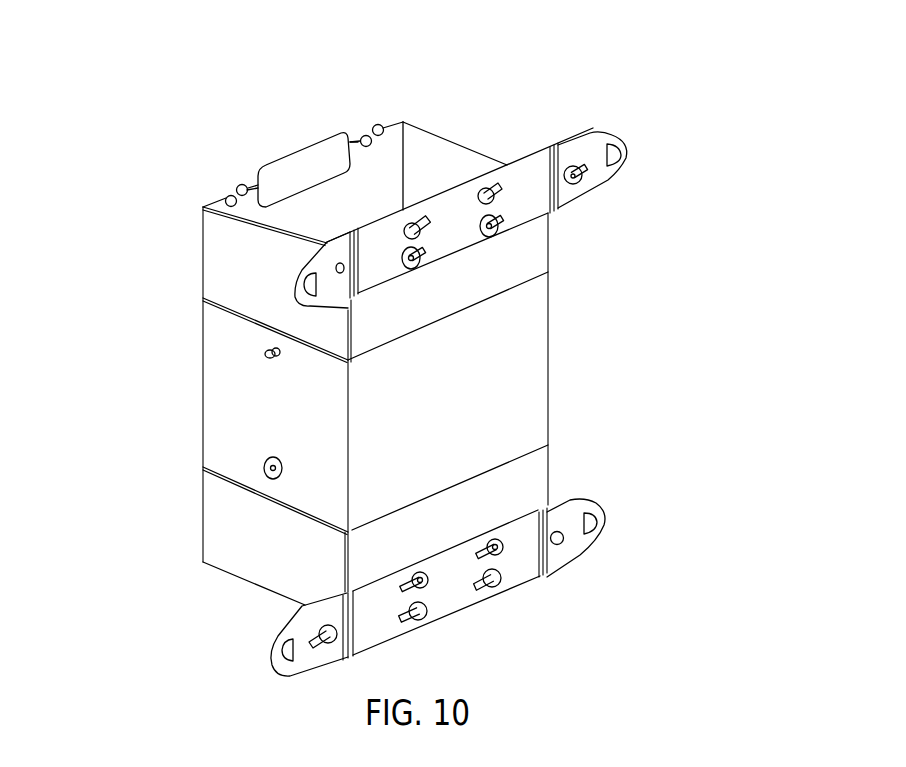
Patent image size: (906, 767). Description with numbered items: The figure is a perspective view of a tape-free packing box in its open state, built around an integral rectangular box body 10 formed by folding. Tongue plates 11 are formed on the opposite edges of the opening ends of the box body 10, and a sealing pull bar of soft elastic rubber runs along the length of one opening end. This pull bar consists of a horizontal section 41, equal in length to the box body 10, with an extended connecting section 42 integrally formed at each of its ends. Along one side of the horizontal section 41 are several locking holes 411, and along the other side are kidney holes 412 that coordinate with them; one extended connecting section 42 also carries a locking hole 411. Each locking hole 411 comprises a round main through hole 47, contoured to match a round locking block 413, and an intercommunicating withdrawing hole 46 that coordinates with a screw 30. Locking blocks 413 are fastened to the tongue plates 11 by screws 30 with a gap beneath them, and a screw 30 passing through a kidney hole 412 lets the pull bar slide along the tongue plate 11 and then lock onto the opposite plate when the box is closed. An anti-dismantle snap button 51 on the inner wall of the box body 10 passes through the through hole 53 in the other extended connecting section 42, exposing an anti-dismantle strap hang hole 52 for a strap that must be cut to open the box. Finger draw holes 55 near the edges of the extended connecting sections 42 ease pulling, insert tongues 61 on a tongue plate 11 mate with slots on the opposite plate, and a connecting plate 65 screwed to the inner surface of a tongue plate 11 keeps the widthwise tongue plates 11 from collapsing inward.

The box body 10 is at (218, 412).
The tongue plate 11 is at (379, 168).
The screw 30 is at (428, 267).
The horizontal section 41 is at (513, 177).
The extended connecting section 42 is at (328, 250).
The withdrawing hole 46 is at (586, 168).
The main through hole 47 is at (574, 178).
The anti-dismantle snap button 51 is at (561, 541).
The anti-dismantle strap hang hole 52 is at (265, 353).
The through hole 53 is at (335, 267).
The finger draw hole 55 is at (624, 155).
The insert tongue 61 is at (375, 122).
The connecting plate 65 is at (325, 162).
The locking hole 411 is at (703, 280).
The kidney hole 412 is at (503, 220).
The locking block 413 is at (489, 224).